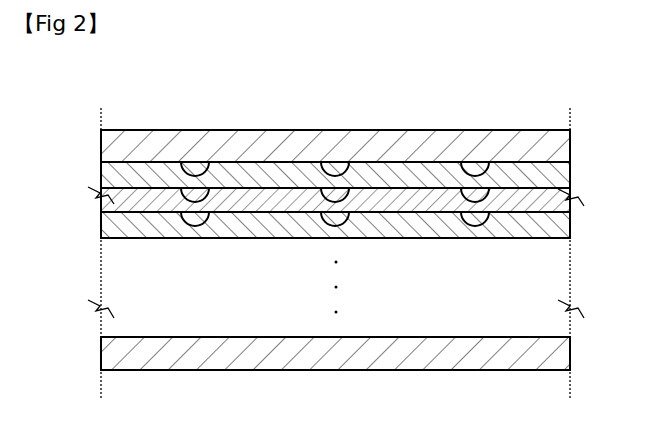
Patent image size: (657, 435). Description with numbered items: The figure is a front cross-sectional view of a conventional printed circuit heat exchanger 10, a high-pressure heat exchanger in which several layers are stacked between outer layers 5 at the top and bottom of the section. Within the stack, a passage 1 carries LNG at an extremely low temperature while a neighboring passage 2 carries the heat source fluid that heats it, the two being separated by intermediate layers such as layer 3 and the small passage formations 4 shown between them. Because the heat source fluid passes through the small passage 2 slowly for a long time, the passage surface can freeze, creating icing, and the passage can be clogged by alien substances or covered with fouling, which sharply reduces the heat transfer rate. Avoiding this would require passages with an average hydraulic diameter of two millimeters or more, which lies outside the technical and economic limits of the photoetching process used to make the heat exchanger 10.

The printed circuit heat exchanger 10 is at (176, 90).
The substrate layer 5 is at (268, 130).
The bump portion 4 is at (404, 170).
The third layer 3 is at (482, 170).
The passage 2 is at (482, 197).
The passage 1 is at (482, 228).